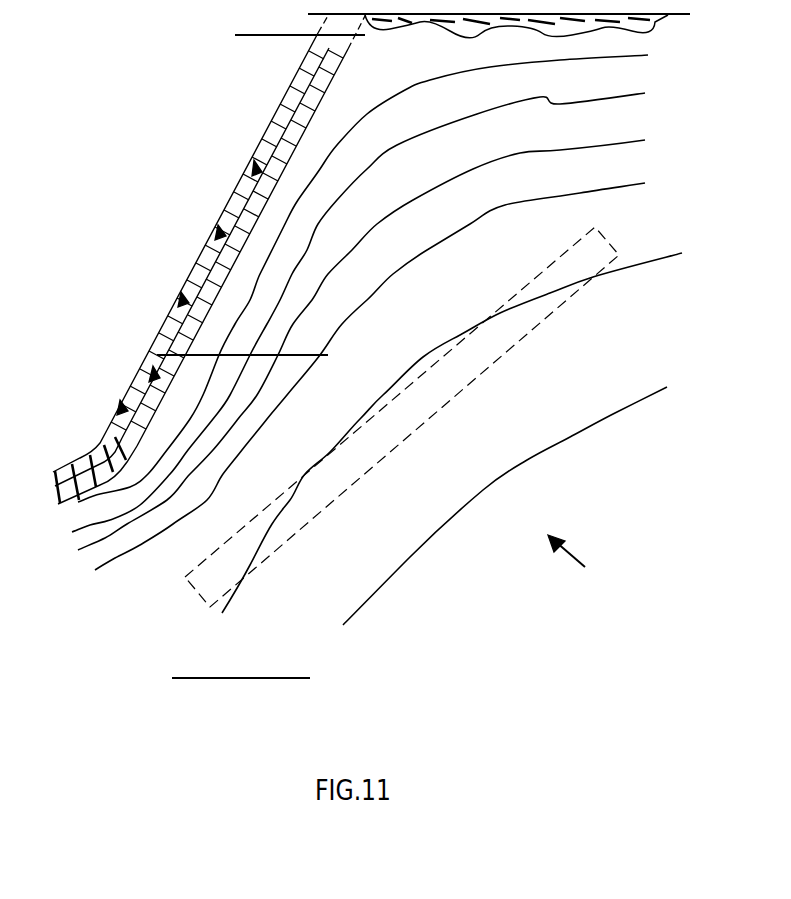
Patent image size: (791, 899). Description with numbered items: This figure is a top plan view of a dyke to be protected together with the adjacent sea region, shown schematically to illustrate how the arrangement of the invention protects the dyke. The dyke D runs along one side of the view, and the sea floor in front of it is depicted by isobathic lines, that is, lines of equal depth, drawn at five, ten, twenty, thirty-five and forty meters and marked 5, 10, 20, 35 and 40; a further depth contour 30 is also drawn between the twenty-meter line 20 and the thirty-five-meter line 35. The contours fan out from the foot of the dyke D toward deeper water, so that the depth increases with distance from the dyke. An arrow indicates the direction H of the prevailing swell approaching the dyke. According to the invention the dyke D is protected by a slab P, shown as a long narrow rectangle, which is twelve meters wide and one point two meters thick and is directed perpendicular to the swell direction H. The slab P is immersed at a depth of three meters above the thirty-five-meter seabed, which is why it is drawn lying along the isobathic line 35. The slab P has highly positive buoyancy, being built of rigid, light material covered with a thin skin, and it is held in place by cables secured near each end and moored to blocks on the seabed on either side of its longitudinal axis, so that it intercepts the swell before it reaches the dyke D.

The isobathic line at 5 m 5 is at (371, 282).
The isobathic line at 10 m 10 is at (361, 312).
The isobathic line at 20 m 20 is at (365, 346).
The contour line 30 is at (374, 379).
The isobathic line at 35 m 35 is at (461, 439).
The isobathic line at 40 m 40 is at (500, 509).
The dyke D is at (228, 197).
The slab P is at (430, 409).
The direction of the prevailing swell H is at (577, 559).